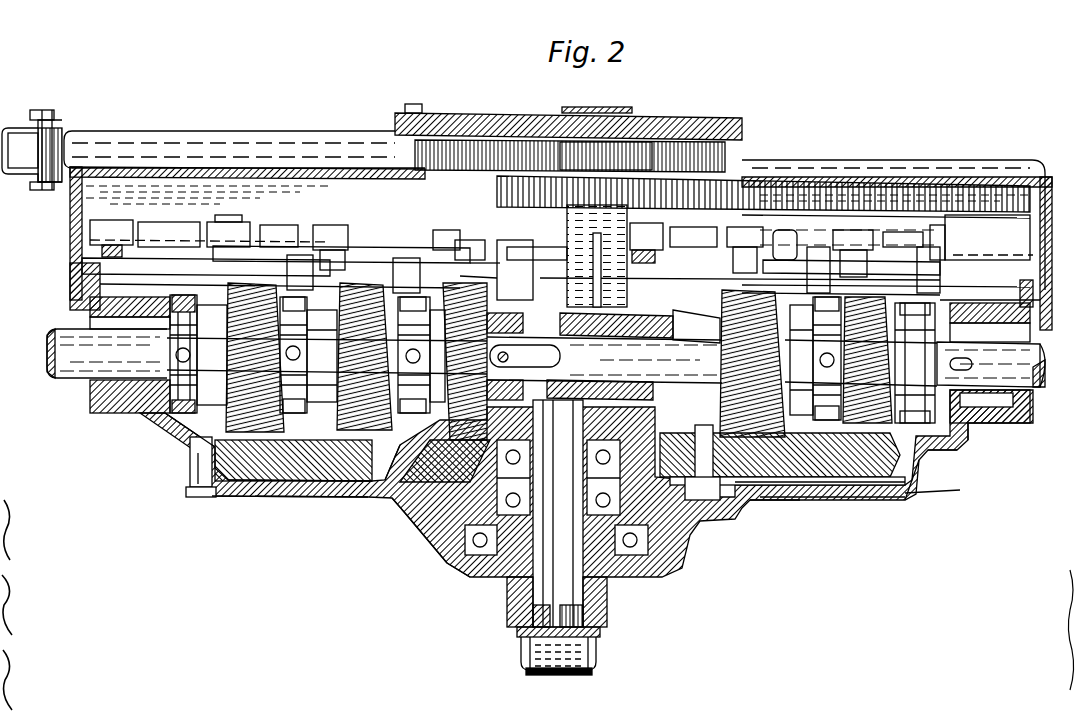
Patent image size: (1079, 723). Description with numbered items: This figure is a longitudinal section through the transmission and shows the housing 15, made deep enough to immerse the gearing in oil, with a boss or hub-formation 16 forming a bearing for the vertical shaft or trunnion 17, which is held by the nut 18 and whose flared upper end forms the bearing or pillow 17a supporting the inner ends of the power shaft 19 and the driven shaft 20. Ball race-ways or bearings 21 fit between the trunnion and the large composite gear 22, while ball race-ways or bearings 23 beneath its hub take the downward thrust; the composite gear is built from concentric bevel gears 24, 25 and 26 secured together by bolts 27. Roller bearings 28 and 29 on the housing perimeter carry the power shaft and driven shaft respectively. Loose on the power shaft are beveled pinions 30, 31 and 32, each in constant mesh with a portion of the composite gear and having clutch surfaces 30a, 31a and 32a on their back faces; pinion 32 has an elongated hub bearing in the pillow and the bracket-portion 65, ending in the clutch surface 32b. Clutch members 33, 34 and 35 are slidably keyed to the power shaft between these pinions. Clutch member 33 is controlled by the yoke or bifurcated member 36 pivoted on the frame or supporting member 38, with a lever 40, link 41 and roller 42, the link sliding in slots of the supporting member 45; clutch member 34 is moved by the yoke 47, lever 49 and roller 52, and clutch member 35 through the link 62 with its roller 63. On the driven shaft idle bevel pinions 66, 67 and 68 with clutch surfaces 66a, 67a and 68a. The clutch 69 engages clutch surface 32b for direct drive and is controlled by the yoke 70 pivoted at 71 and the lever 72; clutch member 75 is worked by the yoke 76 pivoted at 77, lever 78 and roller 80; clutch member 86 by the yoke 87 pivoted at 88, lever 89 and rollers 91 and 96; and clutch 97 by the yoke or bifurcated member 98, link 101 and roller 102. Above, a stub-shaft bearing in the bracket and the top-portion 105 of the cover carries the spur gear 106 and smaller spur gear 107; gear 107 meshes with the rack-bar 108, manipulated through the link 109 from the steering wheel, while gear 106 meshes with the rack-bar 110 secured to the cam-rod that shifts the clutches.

The housing 15 is at (205, 445).
The boss or hub-formation 16 is at (603, 631).
The shaft or trunnion 17 is at (543, 562).
The bearing or pillow 17a is at (558, 513).
The nut 18 is at (598, 656).
The power shaft 19 is at (1035, 357).
The driven shaft 20 is at (56, 377).
The ball race-ways or bearings 21 is at (440, 500).
The composite gear 22 is at (345, 496).
The ball race-ways or bearings 23 is at (443, 553).
The bevel gear 24 is at (255, 497).
The bevel gear 25 is at (310, 496).
The bevel gear 26 is at (405, 493).
The bolts 27 is at (405, 515).
The anti-friction bearing 28 is at (1026, 400).
The anti-friction bearing 29 is at (100, 414).
The beveled pinion 30 is at (897, 440).
The clutch surface 30a is at (937, 437).
The beveled pinion 31 is at (825, 497).
The clutch surface 31a is at (868, 497).
The beveled pinion 32 is at (800, 500).
The clutch surface 32a is at (830, 500).
The clutch surface 32b is at (547, 300).
The clutch member 33 is at (978, 445).
The clutch member 34 is at (848, 487).
The clutch member 35 is at (790, 500).
The yoke or bifurcated member 36 is at (890, 303).
The frame or supporting member 38 is at (1023, 278).
The lever 40 is at (905, 262).
The link 41 is at (893, 248).
The roller 42 is at (862, 232).
The supporting member 45 is at (990, 238).
The bifurcated member or yoke 47 is at (898, 492).
The lever 49 is at (818, 248).
The roller 52 is at (790, 232).
The link 62 is at (735, 226).
The roller 63 is at (648, 250).
The bracket-portion 65 is at (622, 307).
The bevel pinion 66 is at (446, 293).
The interlocking surface 66a is at (480, 300).
The bevel pinion 67 is at (398, 260).
The clutch surface 67a is at (340, 295).
The bevel pinion 68 is at (225, 450).
The clutch surface 68a is at (205, 460).
The clutch 69 is at (478, 260).
The yoke 70 is at (470, 296).
The pivot 71 is at (526, 247).
The lever 72 is at (575, 253).
The clutch member 75 is at (372, 540).
The yoke 76 is at (385, 500).
The pivot 77 is at (396, 262).
The lever 78 is at (377, 258).
The roller 80 is at (330, 240).
The clutch member 86 is at (275, 497).
The yoke 87 is at (235, 497).
The pivot 88 is at (283, 240).
The lever 89 is at (300, 256).
The roller 91 is at (247, 247).
The roller 96 is at (250, 230).
The clutch 97 is at (195, 452).
The yoke or bifurcated member 98 is at (178, 413).
The link 101 is at (104, 251).
The roller 102 is at (95, 232).
The top-portion of cover member 105 is at (507, 120).
The spur gear 106 is at (493, 180).
The spur gear 107 is at (670, 148).
The rack-bar 108 is at (292, 131).
The link or rod 109 is at (52, 128).
The rack-bar 110 is at (843, 192).